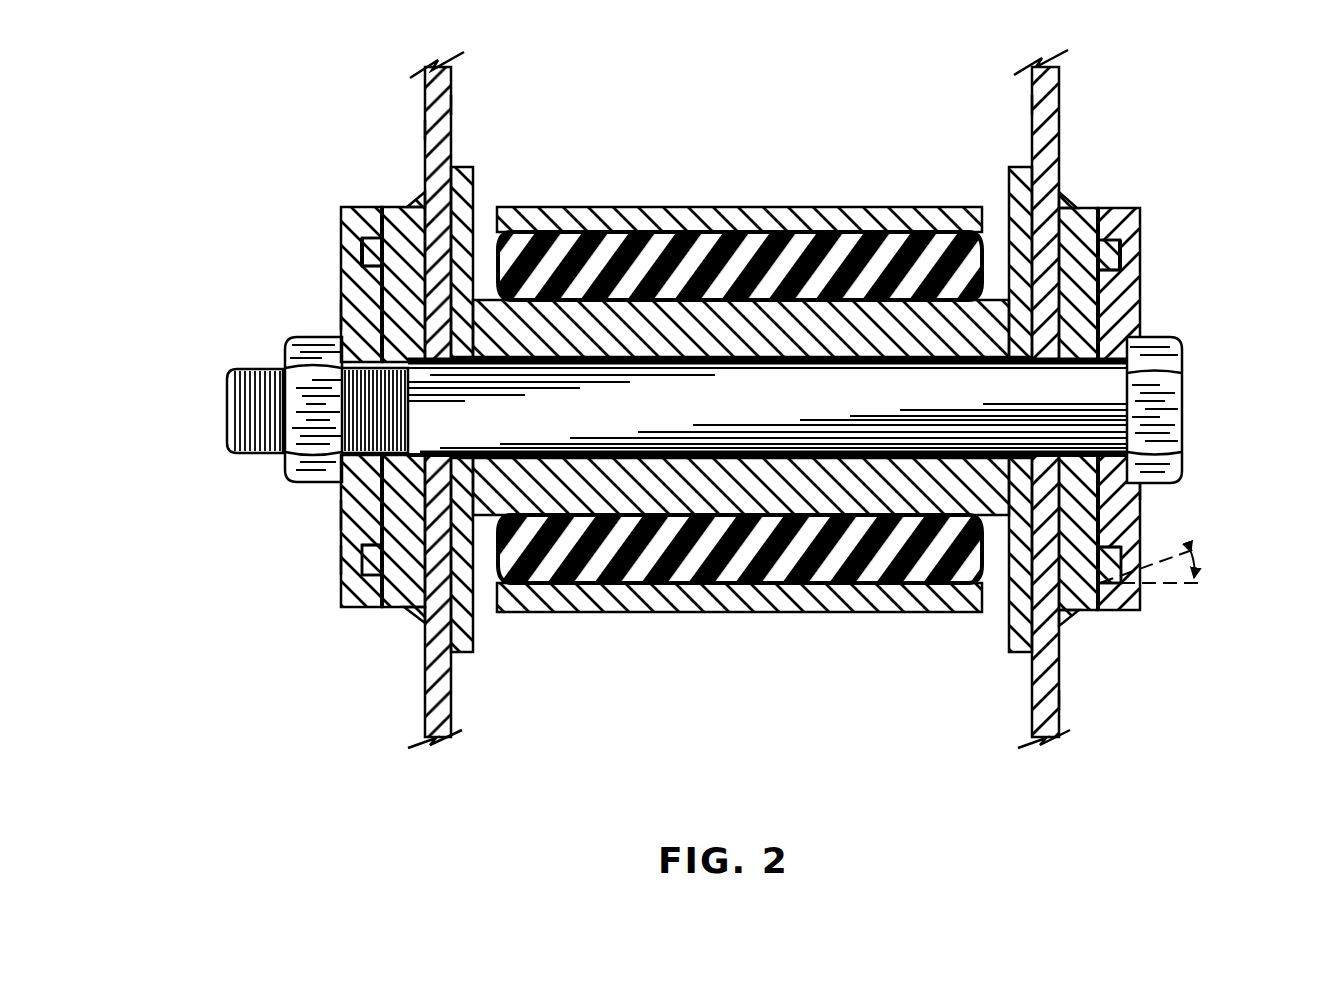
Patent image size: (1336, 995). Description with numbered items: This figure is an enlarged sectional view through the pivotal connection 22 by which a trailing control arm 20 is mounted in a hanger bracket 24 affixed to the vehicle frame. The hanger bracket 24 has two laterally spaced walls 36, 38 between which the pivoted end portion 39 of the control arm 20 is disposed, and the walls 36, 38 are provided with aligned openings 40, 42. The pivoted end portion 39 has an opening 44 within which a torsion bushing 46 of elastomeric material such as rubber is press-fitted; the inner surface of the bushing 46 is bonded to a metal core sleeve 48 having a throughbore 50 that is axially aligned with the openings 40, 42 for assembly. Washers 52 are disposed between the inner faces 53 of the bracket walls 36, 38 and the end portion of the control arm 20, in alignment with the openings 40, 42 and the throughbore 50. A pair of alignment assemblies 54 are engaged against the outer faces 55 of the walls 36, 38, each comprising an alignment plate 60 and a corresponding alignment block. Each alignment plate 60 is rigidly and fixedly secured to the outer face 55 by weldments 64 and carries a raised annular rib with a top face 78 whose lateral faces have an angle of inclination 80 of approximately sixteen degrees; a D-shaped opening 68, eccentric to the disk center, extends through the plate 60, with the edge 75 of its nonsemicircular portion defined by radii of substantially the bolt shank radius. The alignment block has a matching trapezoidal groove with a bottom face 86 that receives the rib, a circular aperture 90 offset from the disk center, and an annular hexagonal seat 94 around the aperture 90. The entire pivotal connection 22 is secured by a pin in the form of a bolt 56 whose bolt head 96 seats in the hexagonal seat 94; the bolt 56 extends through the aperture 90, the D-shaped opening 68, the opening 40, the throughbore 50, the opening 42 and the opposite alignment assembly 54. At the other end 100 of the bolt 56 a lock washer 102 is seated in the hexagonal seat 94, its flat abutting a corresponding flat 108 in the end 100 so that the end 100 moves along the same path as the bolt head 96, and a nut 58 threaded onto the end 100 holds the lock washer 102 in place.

The trailing control arm 20 is at (741, 391).
The pivotal connection 22 is at (668, 400).
The hanger bracket 24 is at (1080, 399).
The wall 36 is at (746, 400).
The wall 38 is at (1062, 115).
The pivoted end portion 39 is at (630, 212).
The opening 40 is at (746, 428).
The opening 42 is at (1168, 401).
The opening 44 is at (741, 393).
The torsion bushing 46 is at (714, 250).
The metal core sleeve 48 is at (670, 490).
The throughbore 50 is at (845, 460).
The washers 52 is at (470, 190).
The inner faces 53 is at (452, 107).
The alignment assemblies 54 is at (744, 428).
The outer faces 55 is at (424, 130).
The bolt 56 is at (703, 447).
The nut 58 is at (312, 475).
The alignment plate 60 is at (392, 588).
The weldments 64 is at (418, 612).
The D-shaped opening 68 is at (352, 555).
The edge 75 is at (1110, 318).
The top face 78 is at (344, 240).
The angle of inclination 80 is at (1195, 555).
The bottom face 86 is at (342, 257).
The circular aperture 90 is at (352, 532).
The annular hexagonal seat 94 is at (1118, 340).
The bolt head 96 is at (1168, 356).
The other end 100 is at (232, 440).
The lock washer 102 is at (345, 492).
The flat 108 is at (348, 320).